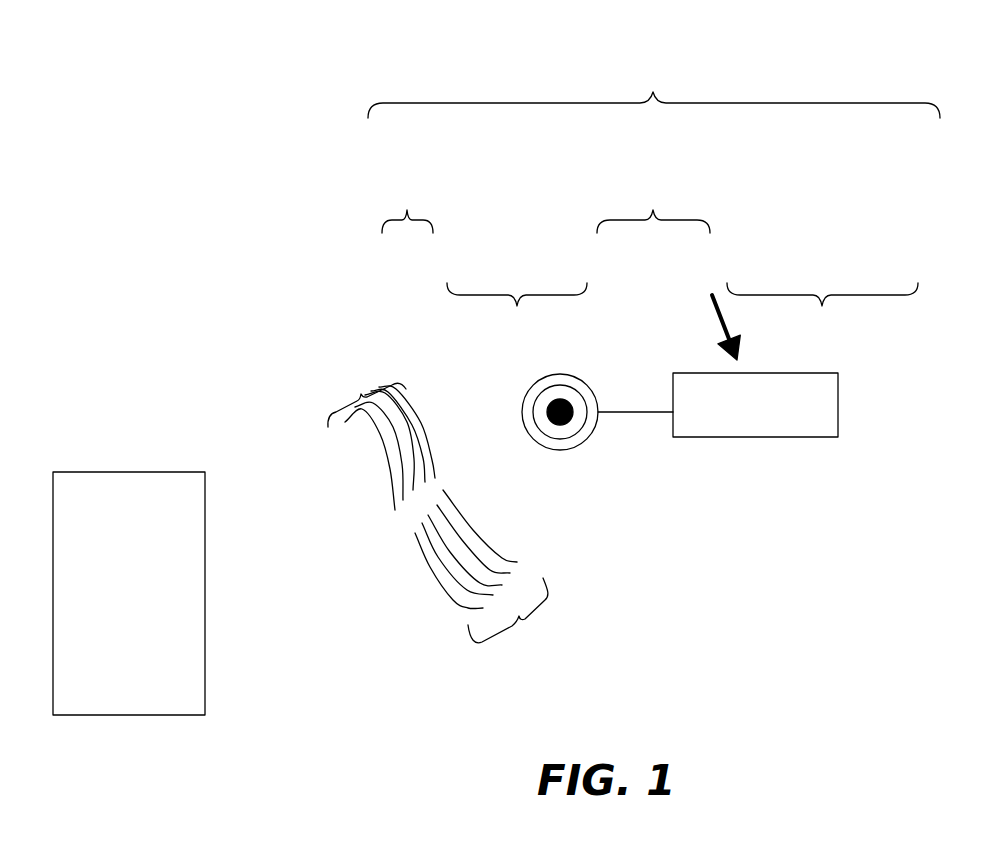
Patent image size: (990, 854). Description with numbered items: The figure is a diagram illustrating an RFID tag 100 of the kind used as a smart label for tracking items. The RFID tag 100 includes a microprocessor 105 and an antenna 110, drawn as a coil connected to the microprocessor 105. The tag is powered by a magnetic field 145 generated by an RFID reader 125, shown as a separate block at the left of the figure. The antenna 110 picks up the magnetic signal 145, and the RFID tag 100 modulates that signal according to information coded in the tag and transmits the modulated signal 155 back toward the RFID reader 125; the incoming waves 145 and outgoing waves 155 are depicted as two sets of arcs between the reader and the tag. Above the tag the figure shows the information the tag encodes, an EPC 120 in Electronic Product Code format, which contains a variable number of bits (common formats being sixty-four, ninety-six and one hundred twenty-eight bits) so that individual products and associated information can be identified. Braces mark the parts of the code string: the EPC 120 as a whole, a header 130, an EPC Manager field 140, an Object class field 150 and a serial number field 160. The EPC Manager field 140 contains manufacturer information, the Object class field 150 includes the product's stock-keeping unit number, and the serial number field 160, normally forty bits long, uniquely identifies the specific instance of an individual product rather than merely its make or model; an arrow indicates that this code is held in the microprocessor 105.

The RFID tag 100 is at (598, 468).
The microprocessor 105 is at (737, 423).
The antenna 110 is at (533, 422).
The EPC 120 is at (653, 91).
The RFID reader 125 is at (128, 485).
The header 130 is at (407, 206).
The EPC Manager field 140 is at (517, 309).
The magnetic field 145 is at (361, 394).
The Object class field 150 is at (653, 206).
The modulated signal 155 is at (519, 621).
The serial number field 160 is at (822, 309).